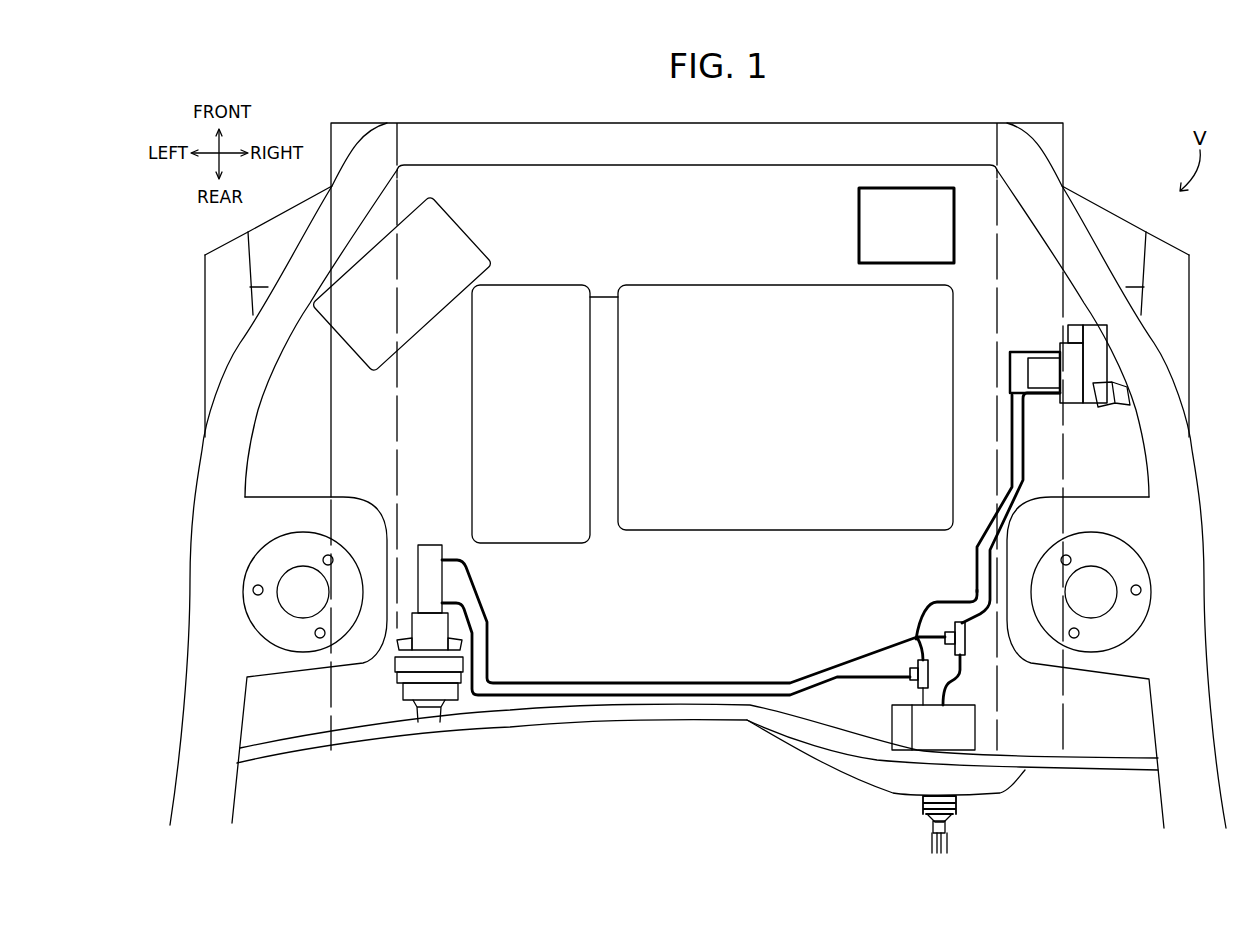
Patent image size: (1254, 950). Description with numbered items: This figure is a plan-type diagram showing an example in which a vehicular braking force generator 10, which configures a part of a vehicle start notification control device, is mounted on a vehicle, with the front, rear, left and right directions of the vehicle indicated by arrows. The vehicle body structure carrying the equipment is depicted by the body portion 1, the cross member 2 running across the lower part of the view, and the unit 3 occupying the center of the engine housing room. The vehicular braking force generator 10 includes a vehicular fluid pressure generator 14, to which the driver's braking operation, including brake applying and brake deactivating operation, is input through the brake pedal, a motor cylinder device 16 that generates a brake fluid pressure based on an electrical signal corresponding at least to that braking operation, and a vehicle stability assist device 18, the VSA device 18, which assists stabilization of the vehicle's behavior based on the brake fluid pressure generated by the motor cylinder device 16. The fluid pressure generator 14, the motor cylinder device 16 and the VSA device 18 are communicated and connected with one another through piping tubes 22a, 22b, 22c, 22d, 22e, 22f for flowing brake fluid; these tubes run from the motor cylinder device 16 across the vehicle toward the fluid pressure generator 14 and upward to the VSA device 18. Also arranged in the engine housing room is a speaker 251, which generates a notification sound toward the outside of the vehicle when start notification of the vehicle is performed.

The vehicle body 1 is at (363, 703).
The cross member 2 is at (1107, 773).
The battery unit 3 is at (738, 285).
The vehicular braking force generator 10 is at (843, 622).
The vehicular fluid pressure generator 14 is at (980, 733).
The motor cylinder device 16 is at (433, 680).
The vehicle stability assist device 18 is at (1090, 323).
The piping tube 22a is at (921, 700).
The piping tube 22b is at (608, 695).
The piping tube 22c is at (1038, 350).
The piping tube 22d is at (957, 680).
The piping tube 22e is at (697, 680).
The piping tube 22f is at (1015, 448).
The speaker 251 is at (924, 238).